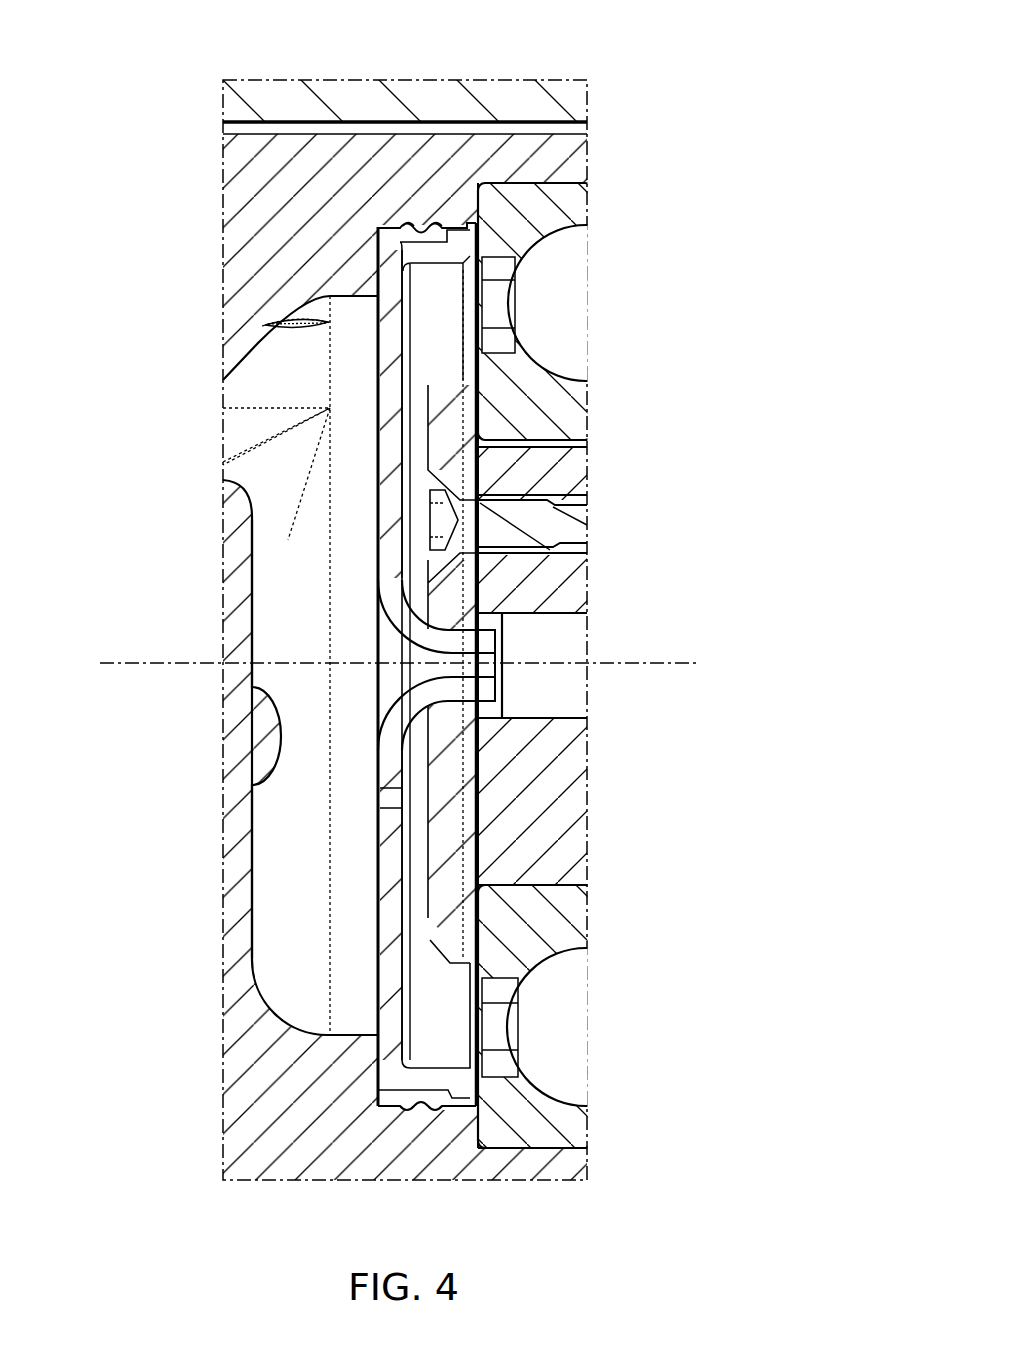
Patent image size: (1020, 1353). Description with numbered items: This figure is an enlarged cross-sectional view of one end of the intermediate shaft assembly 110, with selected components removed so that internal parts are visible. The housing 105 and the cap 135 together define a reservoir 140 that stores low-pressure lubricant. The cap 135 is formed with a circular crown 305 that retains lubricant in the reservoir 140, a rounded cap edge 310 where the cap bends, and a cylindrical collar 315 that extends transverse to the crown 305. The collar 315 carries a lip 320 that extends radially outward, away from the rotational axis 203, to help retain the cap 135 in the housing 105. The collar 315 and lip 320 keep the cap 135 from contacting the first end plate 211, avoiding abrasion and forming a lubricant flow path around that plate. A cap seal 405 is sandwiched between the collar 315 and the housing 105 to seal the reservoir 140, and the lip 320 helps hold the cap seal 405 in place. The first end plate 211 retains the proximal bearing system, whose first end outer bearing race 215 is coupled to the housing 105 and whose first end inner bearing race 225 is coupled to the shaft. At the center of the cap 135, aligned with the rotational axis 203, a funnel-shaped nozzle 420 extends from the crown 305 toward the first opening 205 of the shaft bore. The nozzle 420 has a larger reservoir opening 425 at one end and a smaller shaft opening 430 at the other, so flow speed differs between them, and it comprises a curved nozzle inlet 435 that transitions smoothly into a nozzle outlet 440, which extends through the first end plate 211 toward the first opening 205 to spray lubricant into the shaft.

The housing 105 is at (322, 1072).
The intermediate shaft assembly 110 is at (767, 97).
The cap 135 is at (378, 348).
The reservoir 140 is at (270, 803).
The rotational axis 203 is at (140, 662).
The first opening 205 is at (517, 723).
The first end plate 211 is at (450, 413).
The first end outer bearing race 215 is at (520, 1113).
The first end inner bearing race 225 is at (513, 928).
The crown 305 is at (302, 326).
The cap edge 310 is at (386, 232).
The collar 315 is at (437, 250).
The lip 320 is at (479, 243).
The cap seal 405 is at (407, 222).
The nozzle 420 is at (398, 673).
The reservoir opening 425 is at (378, 644).
The shaft opening 430 is at (500, 687).
The nozzle inlet 435 is at (378, 596).
The nozzle outlet 440 is at (513, 651).